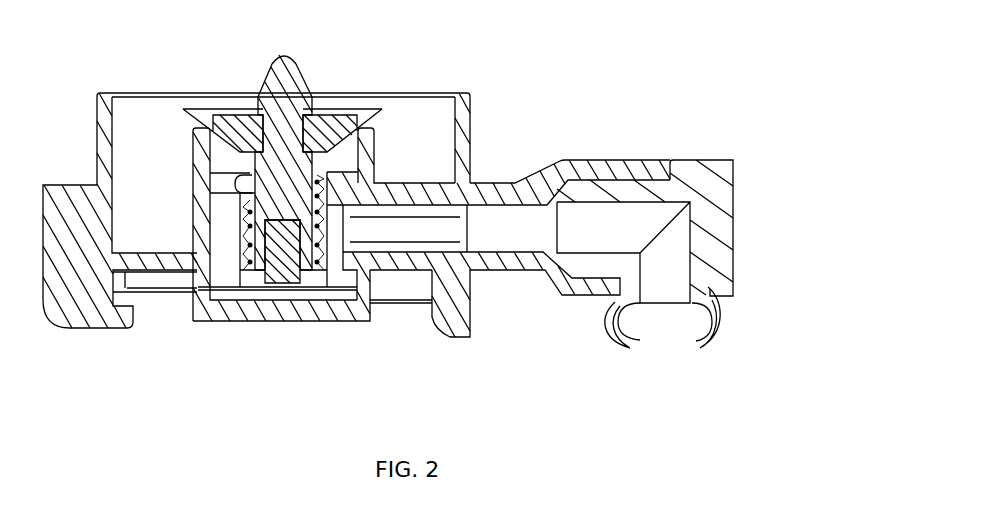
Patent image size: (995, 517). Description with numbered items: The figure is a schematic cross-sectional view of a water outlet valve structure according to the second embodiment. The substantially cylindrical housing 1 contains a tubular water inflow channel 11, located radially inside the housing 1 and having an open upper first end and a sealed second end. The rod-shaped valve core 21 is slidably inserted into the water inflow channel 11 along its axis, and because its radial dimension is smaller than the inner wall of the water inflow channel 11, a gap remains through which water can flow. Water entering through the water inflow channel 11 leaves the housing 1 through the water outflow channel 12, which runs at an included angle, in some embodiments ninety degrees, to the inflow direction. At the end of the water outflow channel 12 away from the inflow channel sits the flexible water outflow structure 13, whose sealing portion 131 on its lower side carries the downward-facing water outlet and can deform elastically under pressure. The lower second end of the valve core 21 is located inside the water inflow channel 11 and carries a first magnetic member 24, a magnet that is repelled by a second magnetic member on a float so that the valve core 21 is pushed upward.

The housing 1 is at (135, 130).
The water inflow channel 11 is at (218, 238).
The water outflow channel 12 is at (506, 217).
The water outflow structure 13 is at (690, 180).
The sealing portion 131 is at (713, 327).
The valve core 21 is at (287, 117).
The first magnetic member 24 is at (287, 273).